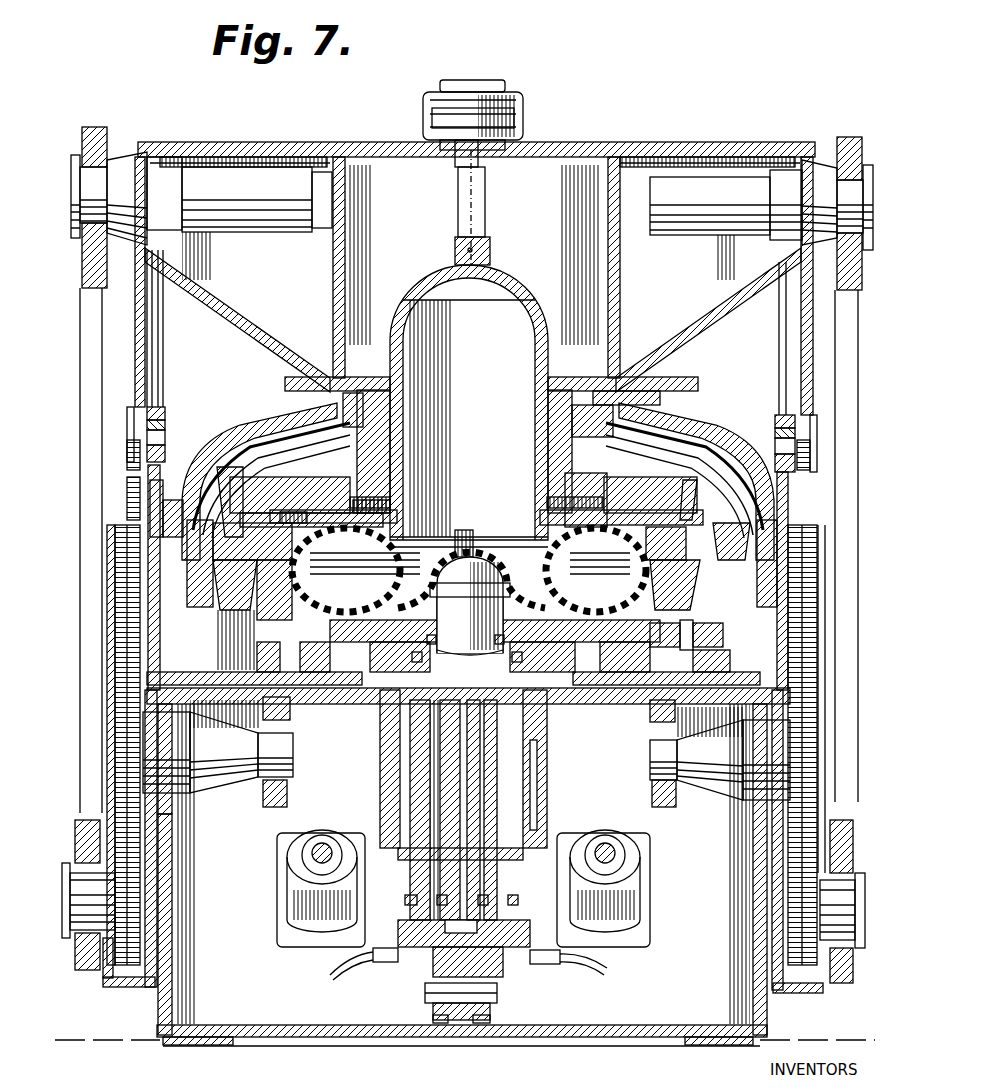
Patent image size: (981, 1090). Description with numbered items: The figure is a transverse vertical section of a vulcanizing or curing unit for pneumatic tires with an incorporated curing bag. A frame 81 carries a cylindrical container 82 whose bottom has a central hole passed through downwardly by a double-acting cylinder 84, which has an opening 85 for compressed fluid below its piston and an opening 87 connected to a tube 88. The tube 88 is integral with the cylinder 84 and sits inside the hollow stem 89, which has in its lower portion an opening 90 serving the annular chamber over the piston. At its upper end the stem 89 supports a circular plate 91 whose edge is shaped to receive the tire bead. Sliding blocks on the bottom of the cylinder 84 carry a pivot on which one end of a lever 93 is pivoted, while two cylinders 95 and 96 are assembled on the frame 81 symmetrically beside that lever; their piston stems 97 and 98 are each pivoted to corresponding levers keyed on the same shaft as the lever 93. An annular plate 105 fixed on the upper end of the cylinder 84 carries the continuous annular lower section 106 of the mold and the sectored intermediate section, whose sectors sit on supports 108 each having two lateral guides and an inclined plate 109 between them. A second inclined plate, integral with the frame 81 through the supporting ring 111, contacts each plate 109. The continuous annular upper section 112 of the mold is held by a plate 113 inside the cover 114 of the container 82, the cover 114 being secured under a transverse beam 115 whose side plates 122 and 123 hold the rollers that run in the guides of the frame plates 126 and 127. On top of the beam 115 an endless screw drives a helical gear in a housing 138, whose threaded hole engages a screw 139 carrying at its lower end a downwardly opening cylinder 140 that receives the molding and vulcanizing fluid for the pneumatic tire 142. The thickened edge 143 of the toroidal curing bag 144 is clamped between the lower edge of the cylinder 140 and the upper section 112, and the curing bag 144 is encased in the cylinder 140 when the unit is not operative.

The frame 81 is at (172, 993).
The cylindrical container 82 is at (175, 530).
The double-acting cylinder 84 is at (392, 785).
The opening 85 is at (420, 960).
The opening 87 is at (507, 963).
The tube 88 is at (478, 788).
The hollow stem 89 is at (497, 813).
The opening 90 is at (417, 873).
The circular plate 91 is at (537, 595).
The lever 93 is at (465, 1022).
The cylinder 95 is at (300, 915).
The cylinder 96 is at (643, 908).
The piston stem 97 is at (312, 850).
The piston stem 98 is at (597, 838).
The annular plate 105 is at (308, 697).
The lower section of mold 106 is at (605, 648).
The supports 108 is at (692, 520).
The inclined plane 109 is at (686, 634).
The supporting ring 111 is at (733, 530).
The upper section of mold 112 is at (600, 510).
The plate 113 is at (677, 440).
The cover 114 is at (273, 425).
The transverse beam 115 is at (567, 145).
The plate 122 is at (147, 357).
The plate 123 is at (800, 369).
The plate 126 is at (163, 480).
The plate 127 is at (777, 493).
The housing 138 is at (461, 90).
The screw 139 is at (463, 158).
The cylinder 140 is at (513, 266).
The pneumatic tire 142 is at (630, 570).
The thickened edge 143 is at (537, 533).
The curing bag 144 is at (466, 552).